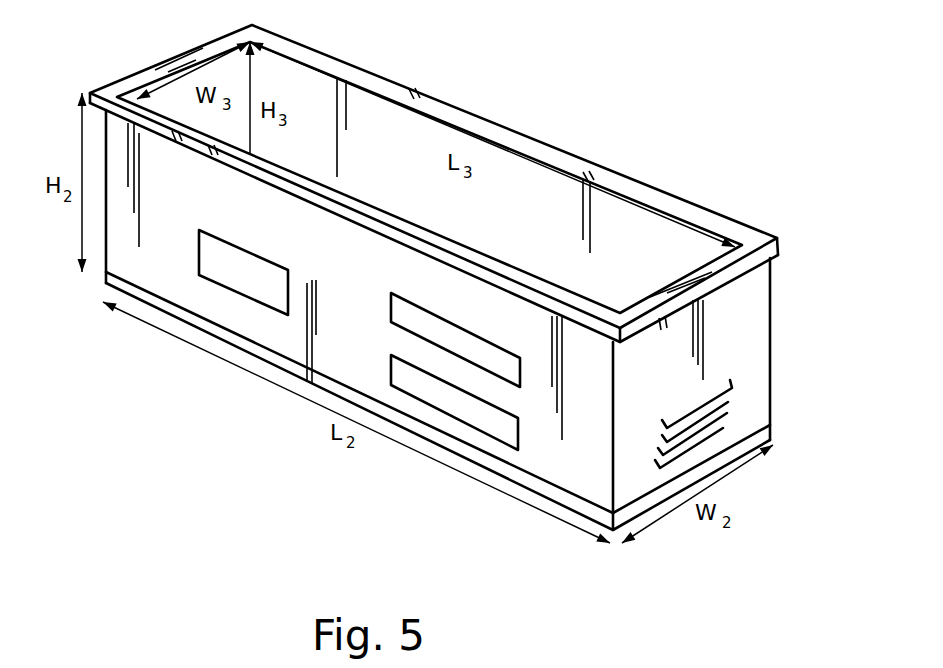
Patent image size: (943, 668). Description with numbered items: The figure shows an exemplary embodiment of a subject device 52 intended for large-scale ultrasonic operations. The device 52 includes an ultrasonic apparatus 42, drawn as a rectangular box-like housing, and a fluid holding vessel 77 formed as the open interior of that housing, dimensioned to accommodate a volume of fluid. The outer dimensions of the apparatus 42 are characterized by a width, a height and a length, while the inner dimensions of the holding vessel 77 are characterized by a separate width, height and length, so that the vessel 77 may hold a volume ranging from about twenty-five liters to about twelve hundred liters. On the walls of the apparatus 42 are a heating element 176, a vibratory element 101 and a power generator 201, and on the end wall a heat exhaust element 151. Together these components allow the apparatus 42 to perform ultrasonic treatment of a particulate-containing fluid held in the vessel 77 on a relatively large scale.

The device 52 is at (626, 99).
The fluid holding vessel 77 is at (637, 223).
The ultrasonic apparatus 42 is at (736, 317).
The heating element 176 is at (253, 300).
The vibratory element 101 is at (391, 322).
The power generator 201 is at (482, 435).
The heat exhaust element 151 is at (723, 412).